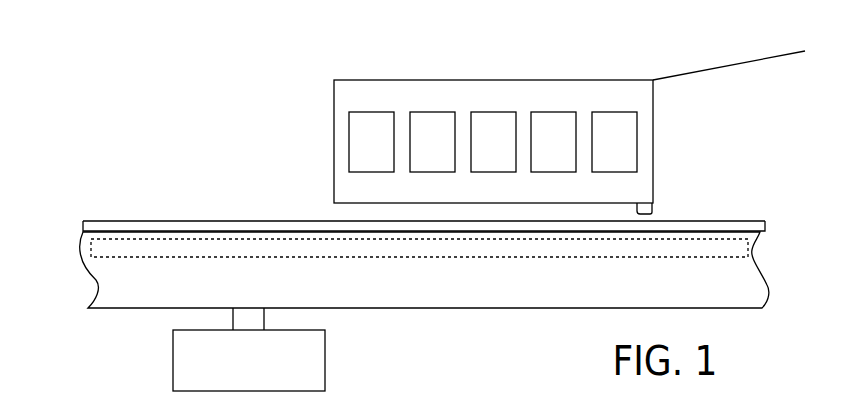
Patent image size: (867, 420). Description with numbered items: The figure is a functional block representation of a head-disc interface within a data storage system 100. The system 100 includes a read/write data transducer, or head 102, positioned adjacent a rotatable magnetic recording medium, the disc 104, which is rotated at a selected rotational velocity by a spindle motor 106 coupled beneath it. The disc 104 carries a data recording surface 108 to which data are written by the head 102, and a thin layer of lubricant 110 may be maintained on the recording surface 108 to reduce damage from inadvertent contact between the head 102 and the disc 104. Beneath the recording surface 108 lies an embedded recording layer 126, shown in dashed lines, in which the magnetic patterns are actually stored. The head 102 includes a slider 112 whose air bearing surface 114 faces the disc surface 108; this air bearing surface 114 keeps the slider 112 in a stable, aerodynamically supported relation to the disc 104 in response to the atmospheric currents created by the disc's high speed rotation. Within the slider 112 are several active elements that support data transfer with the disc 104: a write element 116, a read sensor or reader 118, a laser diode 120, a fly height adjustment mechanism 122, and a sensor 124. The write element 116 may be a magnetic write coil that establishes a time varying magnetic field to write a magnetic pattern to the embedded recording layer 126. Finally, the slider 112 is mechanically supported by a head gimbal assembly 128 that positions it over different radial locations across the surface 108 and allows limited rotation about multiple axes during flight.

The data storage system 100 is at (149, 75).
The read/write data transducer (head) 102 is at (309, 133).
The rotatable magnetic recording medium (disc) 104 is at (63, 245).
The spindle motor 106 is at (326, 356).
The data recording surface 108 is at (242, 211).
The thin layer of lubricant 110 is at (191, 230).
The slider 112 is at (653, 125).
The air bearing surface (ABS) 114 is at (656, 213).
The write element (W) 116 is at (371, 111).
The read sensor (R) or reader 118 is at (431, 111).
The laser diode (L) 120 is at (491, 111).
The fly height adjustment mechanism (F) 122 is at (553, 111).
The sensor (S) 124 is at (609, 111).
The embedded recording layer 126 is at (115, 238).
The head gimbal assembly (HGA) 128 is at (752, 61).